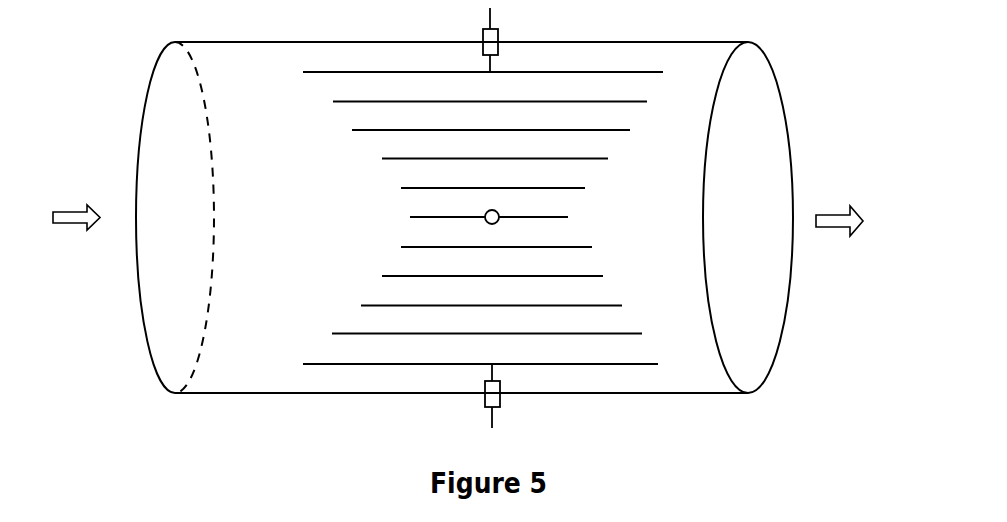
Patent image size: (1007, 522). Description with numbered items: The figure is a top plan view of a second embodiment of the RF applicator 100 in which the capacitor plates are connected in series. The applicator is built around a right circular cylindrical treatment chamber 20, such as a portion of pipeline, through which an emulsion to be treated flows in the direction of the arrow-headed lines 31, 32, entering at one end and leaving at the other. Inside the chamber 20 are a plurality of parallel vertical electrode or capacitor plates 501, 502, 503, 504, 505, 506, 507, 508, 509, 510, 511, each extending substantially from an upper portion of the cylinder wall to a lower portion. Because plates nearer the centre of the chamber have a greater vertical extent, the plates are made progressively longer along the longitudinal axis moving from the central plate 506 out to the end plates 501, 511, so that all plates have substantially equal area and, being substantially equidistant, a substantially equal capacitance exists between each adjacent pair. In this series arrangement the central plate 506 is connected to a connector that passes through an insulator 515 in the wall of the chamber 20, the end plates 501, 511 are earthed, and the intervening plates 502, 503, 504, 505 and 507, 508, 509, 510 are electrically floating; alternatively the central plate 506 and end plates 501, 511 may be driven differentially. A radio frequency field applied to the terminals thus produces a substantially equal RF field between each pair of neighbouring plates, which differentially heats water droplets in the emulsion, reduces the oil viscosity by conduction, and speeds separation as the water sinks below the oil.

The separation system 100 is at (784, 33).
The treatment chamber 20 is at (655, 42).
The arrow-headed line 31 is at (76, 241).
The arrow-headed line 32 is at (839, 244).
The end plate 501 is at (658, 364).
The intervening plate 502 is at (642, 334).
The intervening plate 503 is at (622, 306).
The intervening plate 504 is at (603, 276).
The intervening plate 505 is at (592, 247).
The central plate 506 is at (568, 217).
The intervening plate 507 is at (585, 188).
The intervening plate 508 is at (608, 158).
The intervening plate 509 is at (630, 130).
The intervening plate 510 is at (647, 102).
The end plate 511 is at (663, 72).
The insulator 515 is at (486, 213).